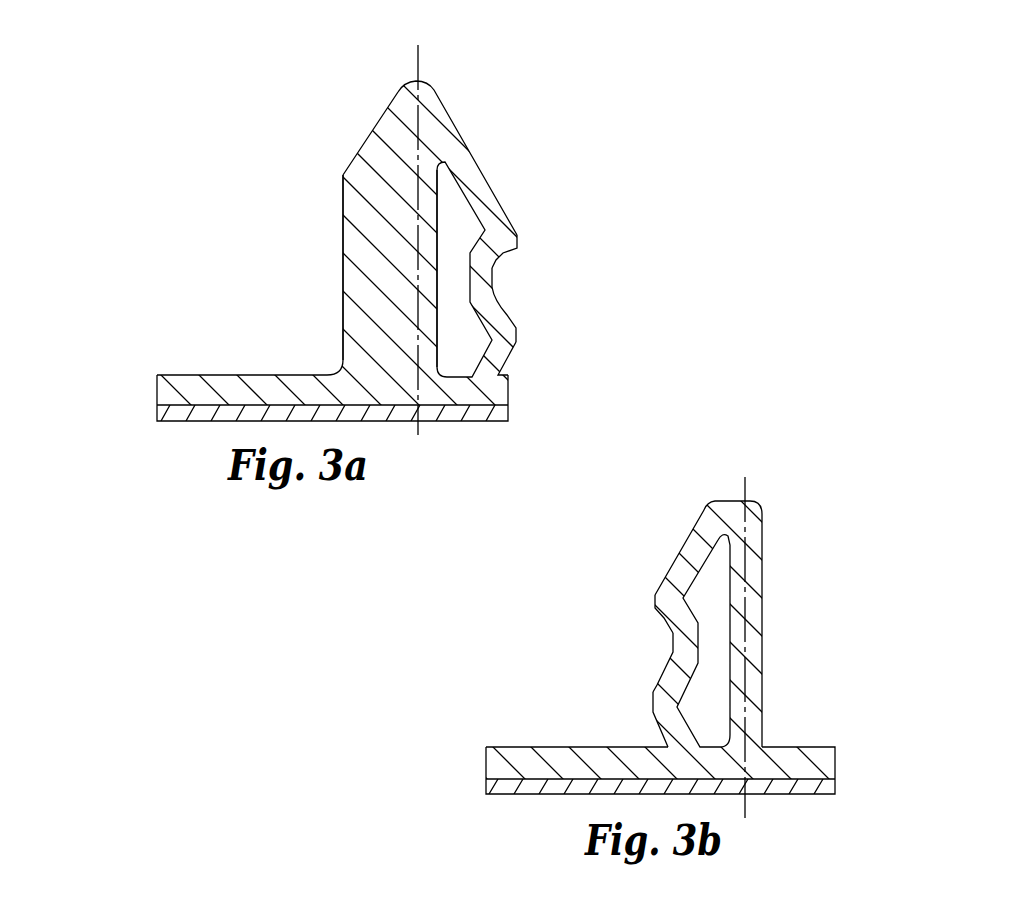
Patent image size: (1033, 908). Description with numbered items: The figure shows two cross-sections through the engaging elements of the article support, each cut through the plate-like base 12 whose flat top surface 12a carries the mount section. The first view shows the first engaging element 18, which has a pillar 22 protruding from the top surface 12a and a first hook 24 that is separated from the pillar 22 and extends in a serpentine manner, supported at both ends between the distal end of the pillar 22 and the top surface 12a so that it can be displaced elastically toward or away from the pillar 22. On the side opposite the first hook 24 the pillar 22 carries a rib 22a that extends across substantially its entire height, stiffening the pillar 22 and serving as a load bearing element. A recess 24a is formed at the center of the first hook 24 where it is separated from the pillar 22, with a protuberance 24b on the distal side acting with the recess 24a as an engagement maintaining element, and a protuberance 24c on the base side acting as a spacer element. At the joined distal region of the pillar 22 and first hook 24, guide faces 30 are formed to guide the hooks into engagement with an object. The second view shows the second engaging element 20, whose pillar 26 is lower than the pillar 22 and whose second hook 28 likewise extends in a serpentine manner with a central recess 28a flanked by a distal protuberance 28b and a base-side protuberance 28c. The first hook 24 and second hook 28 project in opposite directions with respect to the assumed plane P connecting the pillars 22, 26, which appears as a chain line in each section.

In FIG. 3A, the assumed plane P is at (418, 64).
In FIG. 3B, the assumed plane P is at (745, 490).
In FIG. 3A, the base 12 is at (145, 382).
In FIG. 3B, the base 12 is at (474, 769).
In FIG. 3A, the top surface 12a is at (213, 374).
In FIG. 3B, the top surface 12a is at (542, 747).
In FIG. 3A, the first engaging element 18 is at (312, 195).
In FIG. 3B, the second engaging element 20 is at (642, 552).
In FIG. 3A, the pillar 22 is at (362, 316).
In FIG. 3A, the rib 22a is at (343, 260).
In FIG. 3A, the first hook 24 is at (502, 207).
In FIG. 3A, the recess 24a is at (493, 285).
In FIG. 3A, the protuberance 24b is at (516, 237).
In FIG. 3A, the protuberance 24c is at (515, 340).
In FIG. 3B, the pillar 26 is at (763, 640).
In FIG. 3B, the second hook 28 is at (664, 620).
In FIG. 3B, the recess 28a is at (674, 648).
In FIG. 3B, the protuberance 28b is at (657, 607).
In FIG. 3B, the protuberance 28c is at (655, 702).
In FIG. 3A, the guide faces 30 is at (378, 122).